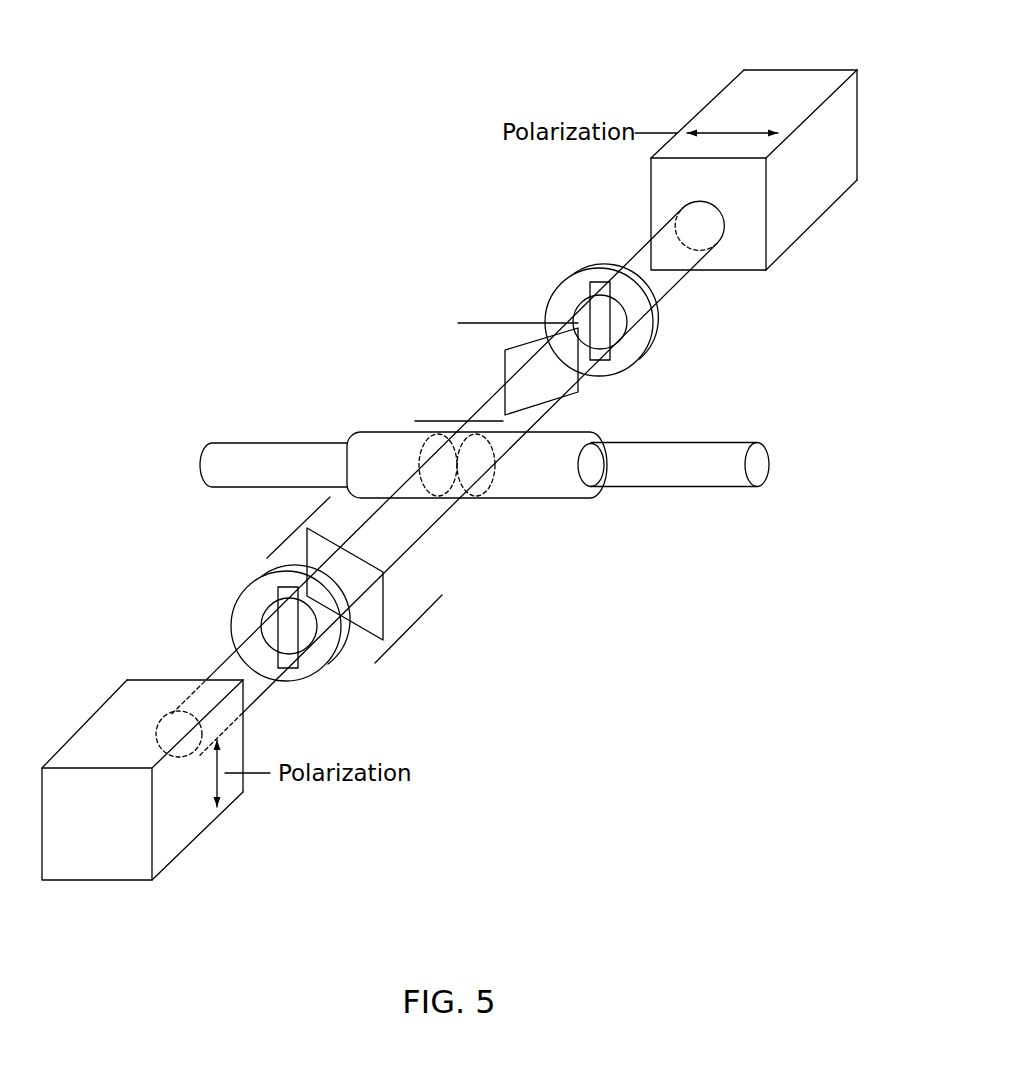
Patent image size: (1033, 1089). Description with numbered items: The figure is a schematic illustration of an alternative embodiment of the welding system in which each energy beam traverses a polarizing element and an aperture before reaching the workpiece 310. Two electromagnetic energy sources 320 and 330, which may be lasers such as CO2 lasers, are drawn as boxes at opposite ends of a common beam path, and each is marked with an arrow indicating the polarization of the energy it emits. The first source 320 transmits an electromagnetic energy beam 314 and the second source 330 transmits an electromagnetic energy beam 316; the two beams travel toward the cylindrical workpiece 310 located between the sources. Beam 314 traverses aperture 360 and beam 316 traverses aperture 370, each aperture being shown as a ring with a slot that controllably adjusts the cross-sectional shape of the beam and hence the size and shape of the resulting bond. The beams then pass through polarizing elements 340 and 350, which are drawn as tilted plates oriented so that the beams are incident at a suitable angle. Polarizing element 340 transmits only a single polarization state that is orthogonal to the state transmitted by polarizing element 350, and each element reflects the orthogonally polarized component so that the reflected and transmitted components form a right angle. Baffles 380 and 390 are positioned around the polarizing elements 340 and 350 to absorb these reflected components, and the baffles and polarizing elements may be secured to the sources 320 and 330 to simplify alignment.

The workpiece 310 is at (523, 500).
The electromagnetic energy beam 314 is at (685, 283).
The electromagnetic energy beam 316 is at (218, 667).
The electromagnetic energy source 320 is at (707, 102).
The electromagnetic energy source 330 is at (198, 830).
The polarizing element 340 is at (583, 384).
The polarizing element 350 is at (361, 625).
The aperture 360 is at (565, 280).
The aperture 370 is at (238, 604).
The baffle 380 is at (267, 556).
The baffle 390 is at (466, 322).